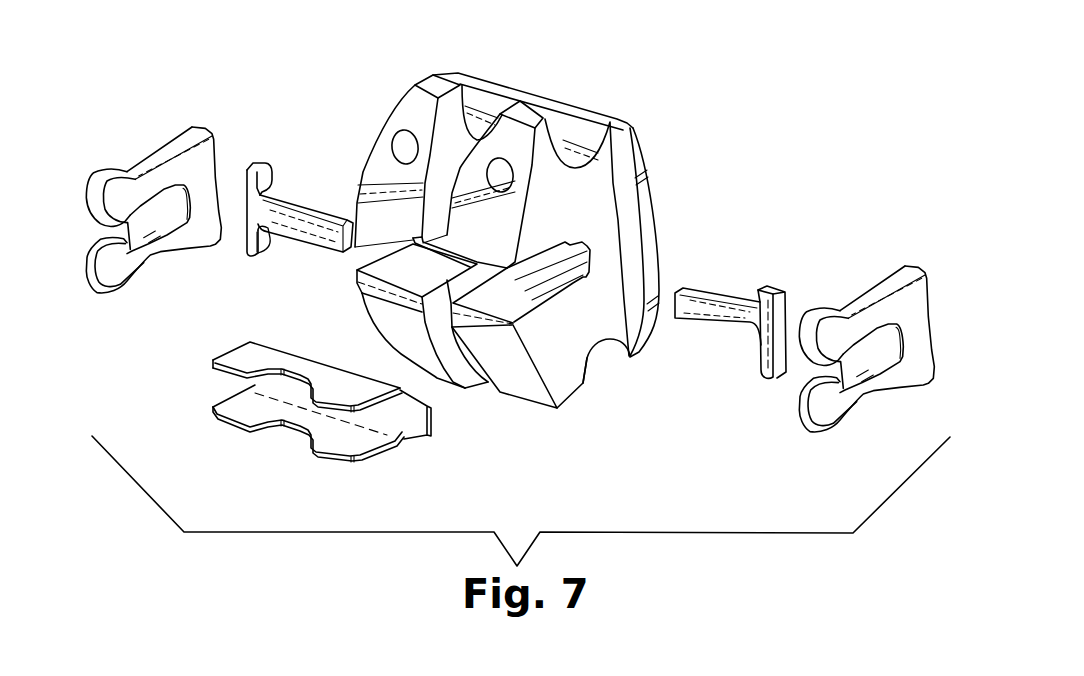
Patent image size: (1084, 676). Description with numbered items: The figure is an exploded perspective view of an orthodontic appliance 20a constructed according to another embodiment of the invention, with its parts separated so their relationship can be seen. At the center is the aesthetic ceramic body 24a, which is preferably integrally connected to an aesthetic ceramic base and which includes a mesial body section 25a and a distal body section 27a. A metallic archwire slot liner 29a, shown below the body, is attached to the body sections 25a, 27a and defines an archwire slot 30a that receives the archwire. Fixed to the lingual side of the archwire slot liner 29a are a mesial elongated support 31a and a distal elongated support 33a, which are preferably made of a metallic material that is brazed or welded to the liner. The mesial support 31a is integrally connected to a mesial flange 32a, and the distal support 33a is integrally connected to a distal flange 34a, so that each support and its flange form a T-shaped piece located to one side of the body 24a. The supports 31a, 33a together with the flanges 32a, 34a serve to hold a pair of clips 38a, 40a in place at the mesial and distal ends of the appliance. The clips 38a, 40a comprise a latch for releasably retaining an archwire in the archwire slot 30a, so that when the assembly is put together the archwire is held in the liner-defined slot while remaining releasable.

The orthodontic appliance 20a is at (737, 108).
The aesthetic ceramic body 24a is at (590, 372).
The mesial body section 25a is at (405, 108).
The distal body section 27a is at (533, 395).
The archwire slot liner 29a is at (370, 443).
The archwire slot 30a is at (237, 410).
The mesial elongated support 31a is at (718, 300).
The mesial flange 32a is at (770, 288).
The distal elongated support 33a is at (316, 207).
The distal flange 34a is at (262, 164).
The clip 38a is at (892, 283).
The clip 40a is at (183, 143).